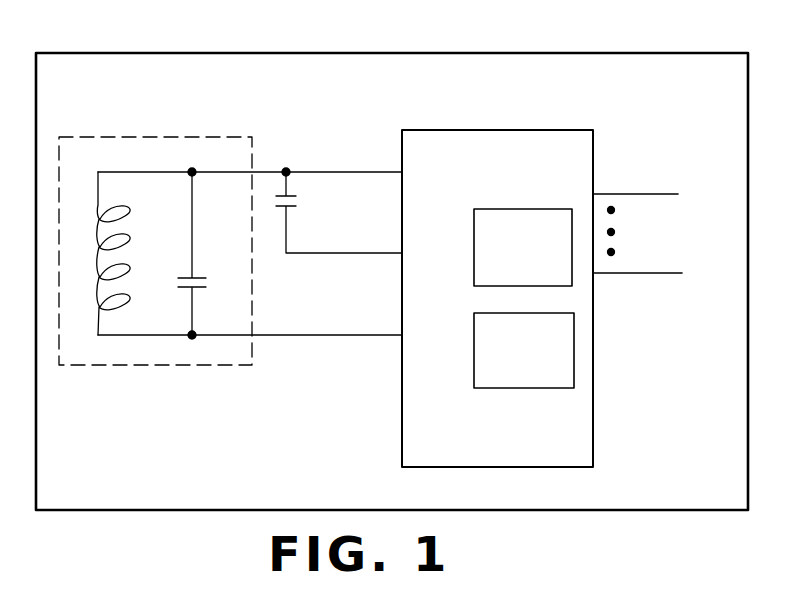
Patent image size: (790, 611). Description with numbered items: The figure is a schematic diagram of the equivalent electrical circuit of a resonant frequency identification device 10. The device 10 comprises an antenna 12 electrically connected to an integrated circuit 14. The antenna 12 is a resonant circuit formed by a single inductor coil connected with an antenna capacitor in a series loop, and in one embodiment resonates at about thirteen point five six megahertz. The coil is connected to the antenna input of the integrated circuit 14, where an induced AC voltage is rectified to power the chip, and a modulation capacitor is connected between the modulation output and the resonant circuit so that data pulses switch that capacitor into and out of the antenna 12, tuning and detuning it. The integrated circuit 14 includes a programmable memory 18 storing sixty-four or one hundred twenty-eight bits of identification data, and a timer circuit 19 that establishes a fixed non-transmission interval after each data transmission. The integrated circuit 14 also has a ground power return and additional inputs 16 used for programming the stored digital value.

The resonant frequency identification device 10 is at (542, 52).
The antenna 12 is at (160, 150).
The integrated circuit 14 is at (449, 143).
The additional inputs 16 is at (648, 194).
The programmable memory 18 is at (530, 377).
The timer circuit 19 is at (528, 218).